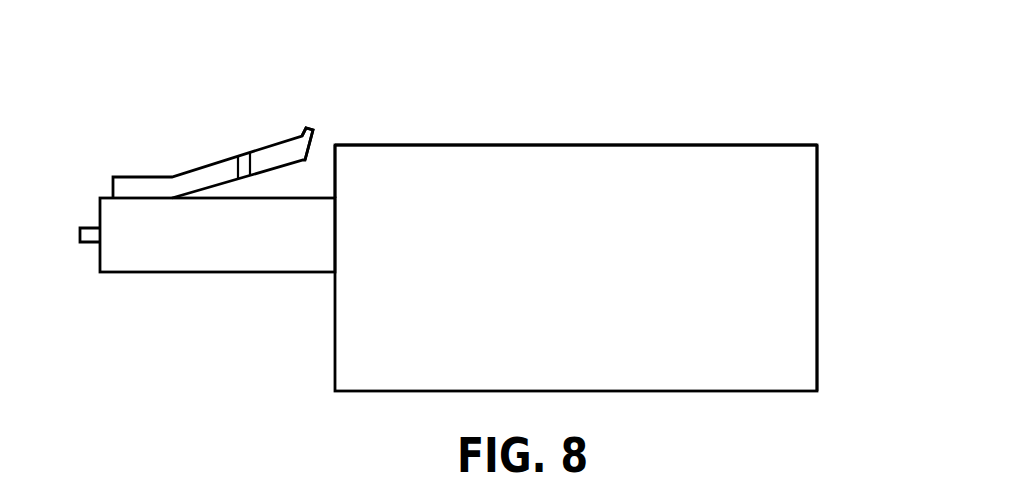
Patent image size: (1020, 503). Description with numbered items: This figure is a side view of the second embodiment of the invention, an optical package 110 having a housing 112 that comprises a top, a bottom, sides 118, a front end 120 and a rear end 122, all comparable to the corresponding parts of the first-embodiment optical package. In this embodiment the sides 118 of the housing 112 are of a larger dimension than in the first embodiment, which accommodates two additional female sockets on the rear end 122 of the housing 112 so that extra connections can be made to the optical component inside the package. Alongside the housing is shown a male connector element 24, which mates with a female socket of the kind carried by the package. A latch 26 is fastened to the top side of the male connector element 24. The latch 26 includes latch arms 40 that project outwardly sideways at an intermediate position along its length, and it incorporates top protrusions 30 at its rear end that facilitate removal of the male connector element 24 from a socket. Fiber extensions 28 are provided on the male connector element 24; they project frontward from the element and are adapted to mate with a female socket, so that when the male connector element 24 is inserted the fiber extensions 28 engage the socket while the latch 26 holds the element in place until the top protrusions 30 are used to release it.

The optical package 110 is at (632, 61).
The housing 112 is at (667, 145).
The sides 118 is at (578, 290).
The front end 120 is at (325, 150).
The rear end 122 is at (817, 263).
The male connector element 24 is at (250, 273).
The latch 26 is at (217, 160).
The fiber extensions 28 is at (90, 226).
The top protrusions 30 is at (303, 132).
The latch arms 40 is at (245, 160).